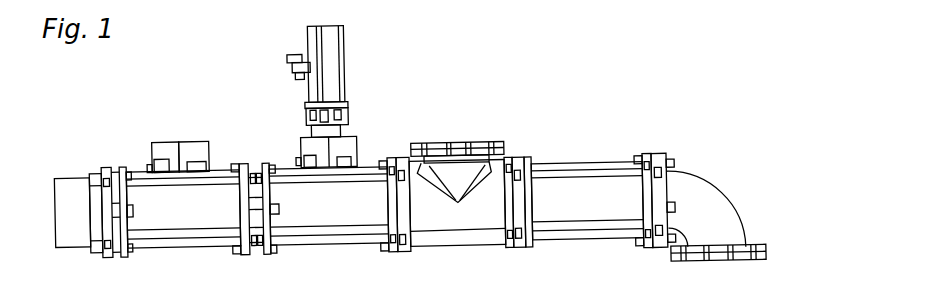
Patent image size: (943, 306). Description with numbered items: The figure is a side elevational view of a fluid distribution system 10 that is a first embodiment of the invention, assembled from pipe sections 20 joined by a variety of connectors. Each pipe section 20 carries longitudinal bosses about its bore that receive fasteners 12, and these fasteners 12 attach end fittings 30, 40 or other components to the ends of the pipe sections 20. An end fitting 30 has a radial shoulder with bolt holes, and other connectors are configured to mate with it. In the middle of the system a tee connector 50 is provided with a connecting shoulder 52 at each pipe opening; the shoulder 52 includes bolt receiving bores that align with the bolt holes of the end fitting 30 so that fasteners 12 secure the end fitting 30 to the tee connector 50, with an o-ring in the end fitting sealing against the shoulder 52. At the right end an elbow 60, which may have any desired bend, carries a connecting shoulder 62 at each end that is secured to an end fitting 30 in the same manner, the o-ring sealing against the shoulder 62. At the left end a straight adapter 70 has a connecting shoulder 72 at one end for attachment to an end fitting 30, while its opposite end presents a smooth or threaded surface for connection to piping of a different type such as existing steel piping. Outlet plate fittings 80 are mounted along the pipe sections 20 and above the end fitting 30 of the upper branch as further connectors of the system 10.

The fluid distribution system 10 is at (552, 128).
The fasteners 12 is at (112, 242).
The pipe section 20 is at (350, 62).
The end fitting 30 is at (368, 93).
The end fitting 40 is at (243, 257).
The tee connector 50 is at (463, 240).
The connecting shoulder 52 is at (402, 167).
The elbow 60 is at (697, 183).
The connecting shoulder 62 is at (662, 161).
The straight adapter 70 is at (70, 177).
The connecting shoulder 72 is at (108, 167).
The outlet plate fitting 80 is at (202, 164).